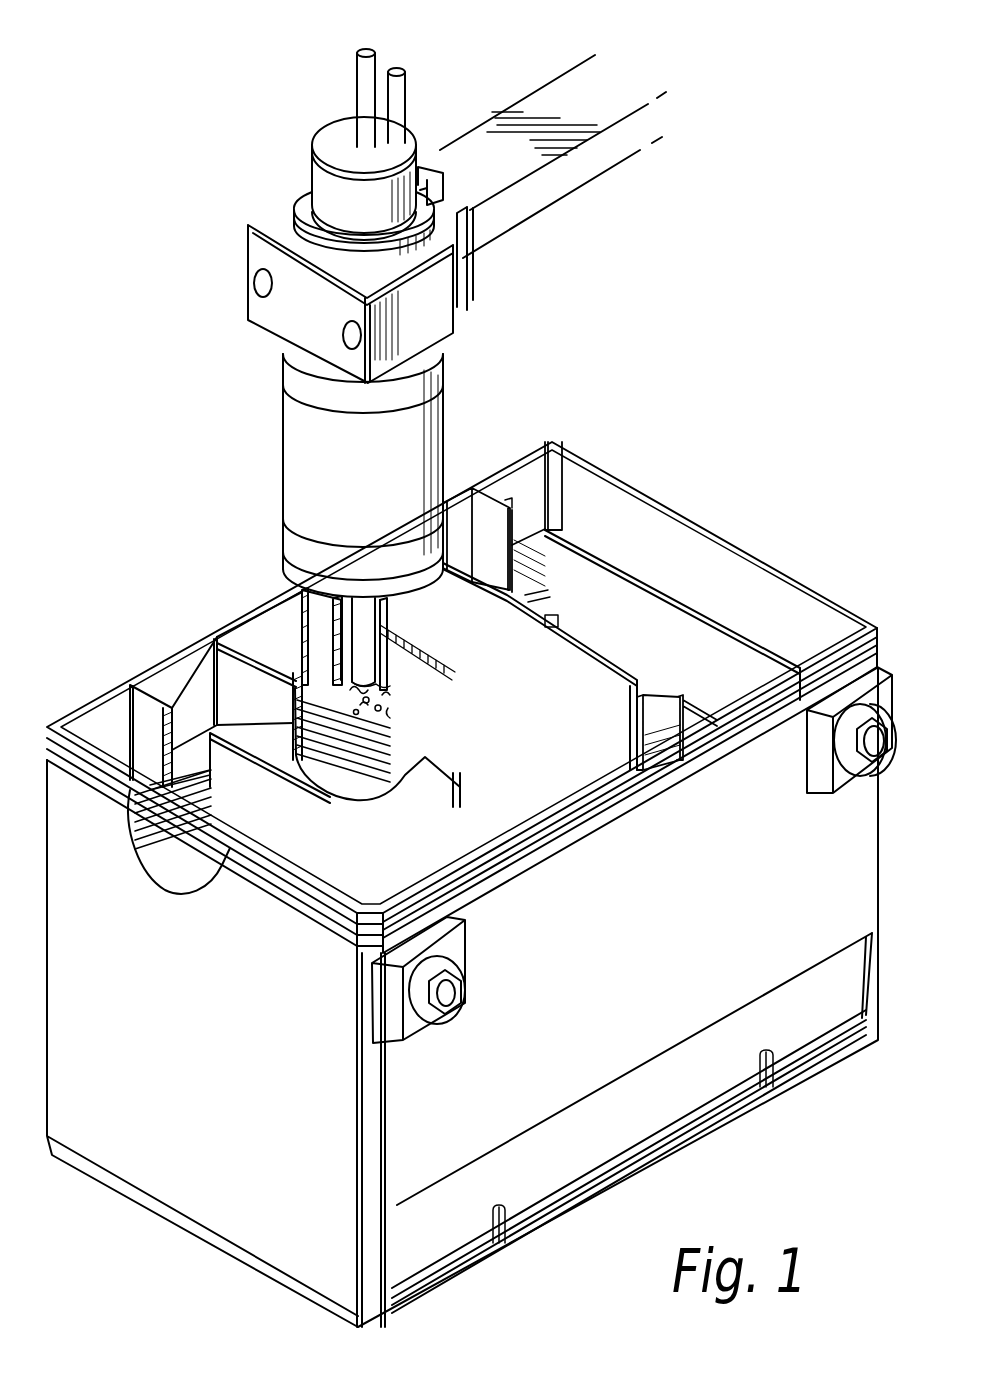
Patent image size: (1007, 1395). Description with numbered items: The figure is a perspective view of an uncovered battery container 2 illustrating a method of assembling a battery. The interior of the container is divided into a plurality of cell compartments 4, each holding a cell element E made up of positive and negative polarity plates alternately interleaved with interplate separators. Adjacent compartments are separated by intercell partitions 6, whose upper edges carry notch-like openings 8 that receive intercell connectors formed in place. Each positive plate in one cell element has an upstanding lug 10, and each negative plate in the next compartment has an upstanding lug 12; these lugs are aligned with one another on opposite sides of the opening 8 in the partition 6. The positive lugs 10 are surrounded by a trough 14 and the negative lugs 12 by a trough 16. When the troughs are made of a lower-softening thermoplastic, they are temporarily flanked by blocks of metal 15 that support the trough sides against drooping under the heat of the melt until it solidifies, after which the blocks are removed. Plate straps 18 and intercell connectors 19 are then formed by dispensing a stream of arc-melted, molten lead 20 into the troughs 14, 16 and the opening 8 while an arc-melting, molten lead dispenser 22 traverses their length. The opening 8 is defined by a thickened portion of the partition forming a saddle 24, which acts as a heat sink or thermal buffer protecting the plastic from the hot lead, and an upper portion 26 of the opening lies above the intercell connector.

The battery container 2 is at (603, 463).
The cell compartments 4 is at (700, 530).
The intercell partitions 6 is at (713, 643).
The notch-like openings 8 is at (507, 500).
The positive plate lug 10 is at (363, 730).
The negative plate lug 12 is at (207, 787).
The trough 14 is at (153, 787).
The blocks of metal 15 is at (135, 777).
The trough 16 is at (253, 737).
The plate straps 18 is at (533, 600).
The intercell connectors 19 is at (530, 603).
The molten lead 20 is at (380, 683).
The arc-melting molten lead dispenser 22 is at (445, 397).
The saddle 24 is at (173, 787).
The upper portion of the opening 26 is at (514, 523).
The cell element E is at (413, 757).